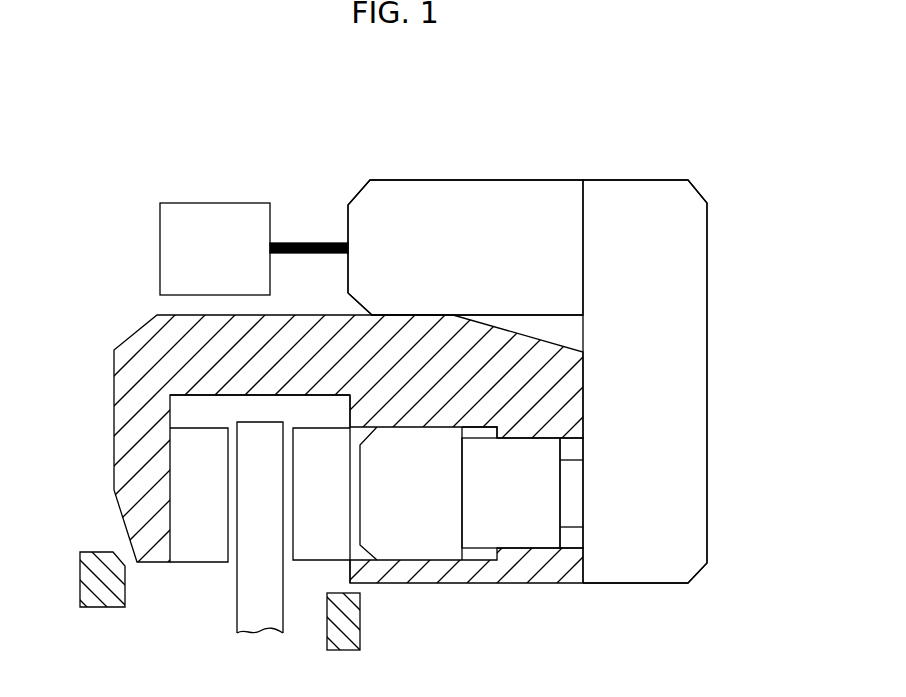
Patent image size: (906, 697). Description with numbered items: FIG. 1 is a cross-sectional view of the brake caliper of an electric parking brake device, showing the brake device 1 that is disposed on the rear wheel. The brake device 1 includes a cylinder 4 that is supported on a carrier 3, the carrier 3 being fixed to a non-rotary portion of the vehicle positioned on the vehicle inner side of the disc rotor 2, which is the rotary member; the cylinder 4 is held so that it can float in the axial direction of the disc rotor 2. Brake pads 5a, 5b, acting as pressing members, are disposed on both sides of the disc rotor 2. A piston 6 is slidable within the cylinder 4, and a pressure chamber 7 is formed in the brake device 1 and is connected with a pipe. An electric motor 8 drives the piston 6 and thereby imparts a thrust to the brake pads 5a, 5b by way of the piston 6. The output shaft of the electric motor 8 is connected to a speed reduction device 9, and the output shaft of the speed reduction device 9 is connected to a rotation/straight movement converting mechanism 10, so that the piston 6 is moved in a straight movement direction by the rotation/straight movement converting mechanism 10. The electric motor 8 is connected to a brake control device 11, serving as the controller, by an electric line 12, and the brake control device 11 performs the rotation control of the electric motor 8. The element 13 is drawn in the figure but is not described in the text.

The brake device 1 is at (598, 164).
The disc rotor 2 is at (245, 605).
The carrier 3 is at (93, 608).
The cylinder 4 is at (115, 383).
The brake pad 5a is at (190, 552).
The brake pad 5b is at (316, 550).
The piston 6 is at (412, 535).
The pressure chamber 7 is at (473, 560).
The electric motor 8 is at (448, 182).
The speed reduction device 9 is at (705, 306).
The rotation/straight movement converting mechanism 10 is at (520, 535).
The brake control device 11 is at (210, 213).
The electric line 12 is at (309, 230).
The connector 13 is at (572, 515).